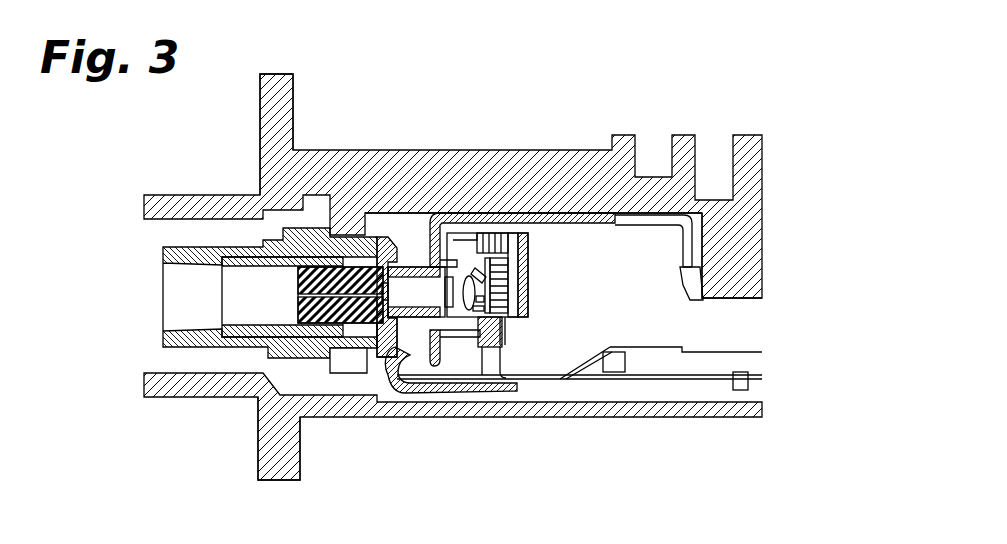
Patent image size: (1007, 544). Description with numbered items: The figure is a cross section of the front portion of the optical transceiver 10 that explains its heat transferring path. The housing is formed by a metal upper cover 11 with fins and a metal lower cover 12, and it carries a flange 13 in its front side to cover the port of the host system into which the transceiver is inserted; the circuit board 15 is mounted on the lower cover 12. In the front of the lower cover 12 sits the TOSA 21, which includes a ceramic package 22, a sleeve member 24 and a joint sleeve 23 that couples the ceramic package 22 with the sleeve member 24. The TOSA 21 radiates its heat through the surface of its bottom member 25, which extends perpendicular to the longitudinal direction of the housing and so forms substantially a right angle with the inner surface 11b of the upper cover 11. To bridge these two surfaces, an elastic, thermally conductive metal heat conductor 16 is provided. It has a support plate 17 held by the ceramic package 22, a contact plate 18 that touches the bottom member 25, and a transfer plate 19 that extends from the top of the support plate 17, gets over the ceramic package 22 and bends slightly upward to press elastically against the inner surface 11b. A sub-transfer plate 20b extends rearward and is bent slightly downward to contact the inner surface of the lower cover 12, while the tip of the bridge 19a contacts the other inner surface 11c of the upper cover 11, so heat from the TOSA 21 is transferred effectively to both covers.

The optical transceiver 10 is at (592, 117).
The upper cover 11 is at (323, 160).
The inner surface of the upper cover 11b is at (417, 217).
The other inner surface of the upper cover 11c is at (690, 293).
The lower cover 12 is at (343, 420).
The flange 13 is at (270, 123).
The circuit board 15 is at (708, 360).
The heat conductor 16 is at (504, 211).
The support plate 17 is at (407, 265).
The contact plate 18 is at (530, 310).
The transfer plate 19 is at (610, 223).
The bridge 19a is at (688, 288).
The sub-transfer plate 20b is at (460, 397).
The TOSA 21 is at (393, 230).
The ceramic package 22 is at (500, 345).
The joint sleeve 23 is at (388, 345).
The sleeve member 24 is at (235, 345).
The bottom member 25 is at (532, 260).